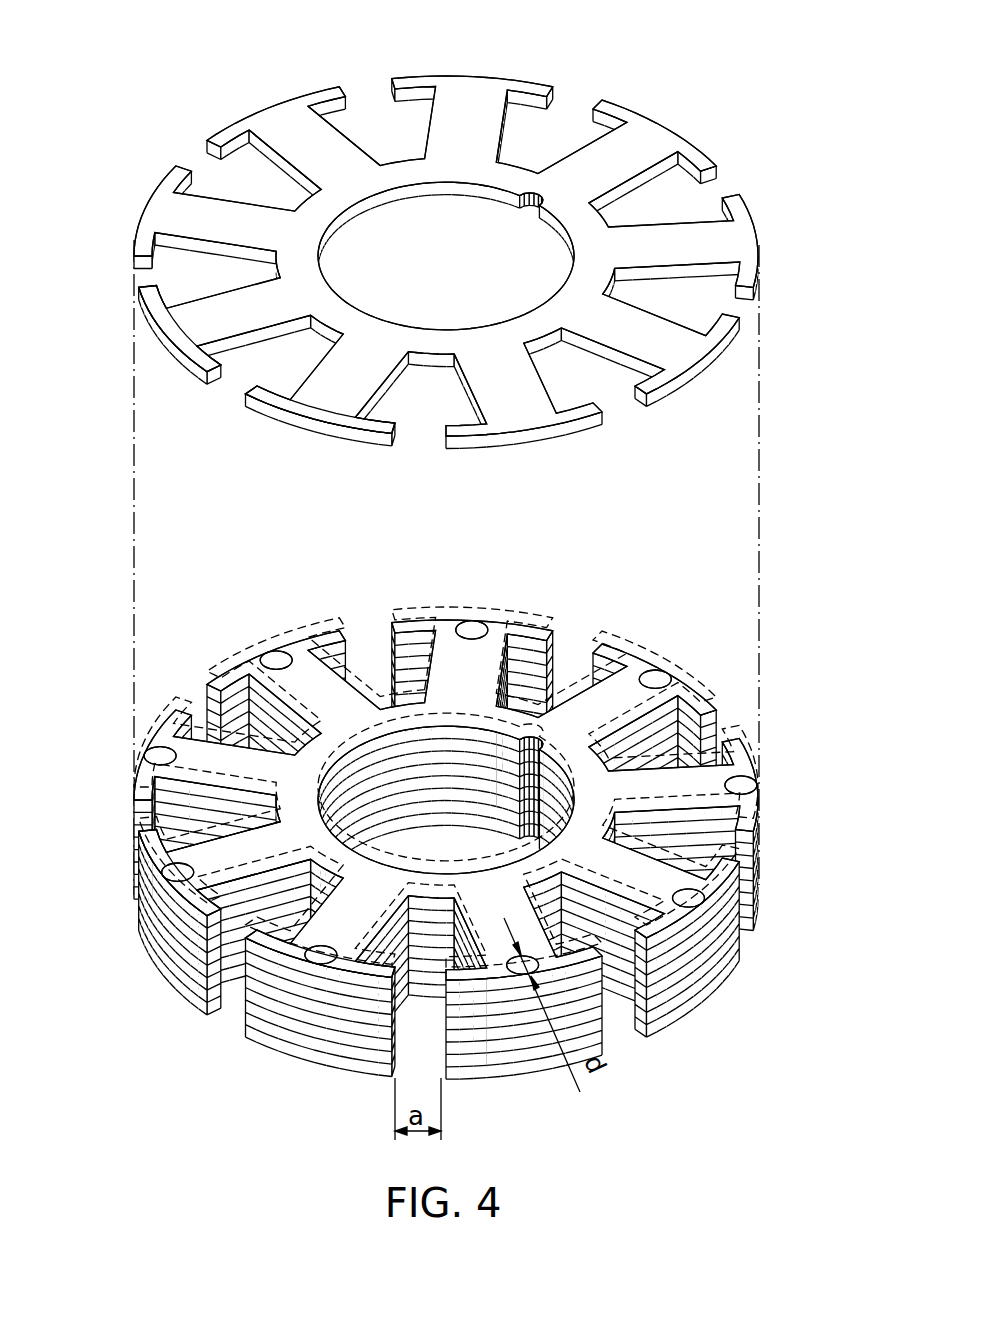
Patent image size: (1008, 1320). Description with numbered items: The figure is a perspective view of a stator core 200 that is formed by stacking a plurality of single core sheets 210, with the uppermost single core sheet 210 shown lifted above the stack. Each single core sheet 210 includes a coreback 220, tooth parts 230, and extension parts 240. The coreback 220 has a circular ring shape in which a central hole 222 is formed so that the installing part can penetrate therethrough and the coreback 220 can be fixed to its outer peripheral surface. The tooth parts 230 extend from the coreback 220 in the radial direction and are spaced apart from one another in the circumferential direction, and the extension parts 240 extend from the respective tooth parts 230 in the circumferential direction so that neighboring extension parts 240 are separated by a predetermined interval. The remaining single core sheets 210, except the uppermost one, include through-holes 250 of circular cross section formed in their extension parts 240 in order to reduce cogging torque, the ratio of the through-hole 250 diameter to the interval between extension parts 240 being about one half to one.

The stator core 200 is at (477, 35).
The single core sheet 210 is at (765, 236).
The coreback 220 is at (310, 197).
The central hole 222 is at (409, 247).
The tooth part 230 is at (208, 322).
The extension part 240 is at (333, 415).
The through-hole 250 is at (722, 882).